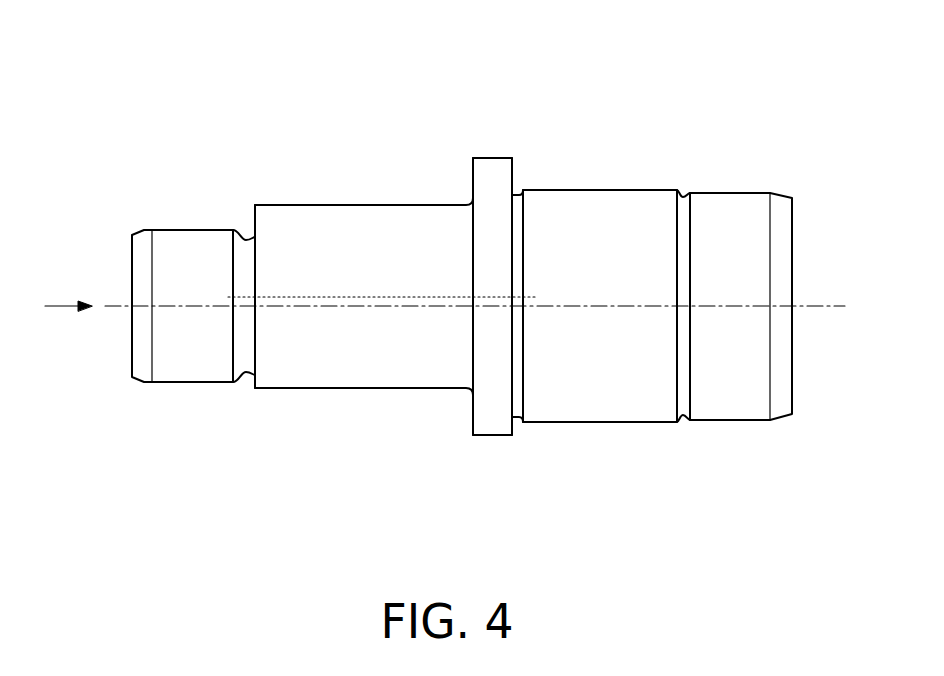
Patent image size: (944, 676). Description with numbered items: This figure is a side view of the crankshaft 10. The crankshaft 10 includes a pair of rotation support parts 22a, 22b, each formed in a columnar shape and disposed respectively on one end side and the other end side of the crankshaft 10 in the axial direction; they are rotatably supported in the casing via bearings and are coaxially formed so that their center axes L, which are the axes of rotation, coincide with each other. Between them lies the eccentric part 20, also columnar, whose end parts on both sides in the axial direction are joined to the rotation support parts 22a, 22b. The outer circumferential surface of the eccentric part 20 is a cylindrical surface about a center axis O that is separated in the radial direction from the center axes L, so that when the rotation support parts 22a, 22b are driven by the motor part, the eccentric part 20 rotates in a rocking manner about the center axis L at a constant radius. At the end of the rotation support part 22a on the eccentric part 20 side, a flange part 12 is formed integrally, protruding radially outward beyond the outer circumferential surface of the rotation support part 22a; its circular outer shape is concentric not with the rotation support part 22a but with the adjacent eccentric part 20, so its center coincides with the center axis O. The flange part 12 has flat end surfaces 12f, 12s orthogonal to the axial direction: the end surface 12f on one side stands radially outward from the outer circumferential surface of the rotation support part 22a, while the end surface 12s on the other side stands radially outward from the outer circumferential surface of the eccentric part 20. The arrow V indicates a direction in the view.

The crankshaft 10 is at (690, 126).
The flange part 12 is at (495, 165).
The end surface of the flange part on the other side 12s is at (473, 175).
The end surface of the flange part on one side 12f is at (513, 172).
The eccentric part 20 is at (353, 390).
The rotation support part 22a is at (632, 422).
The rotation support part 22b is at (183, 383).
The center axis of the eccentric part O is at (327, 295).
The center axis of the rotation support parts L is at (812, 305).
The viewing direction V is at (68, 292).